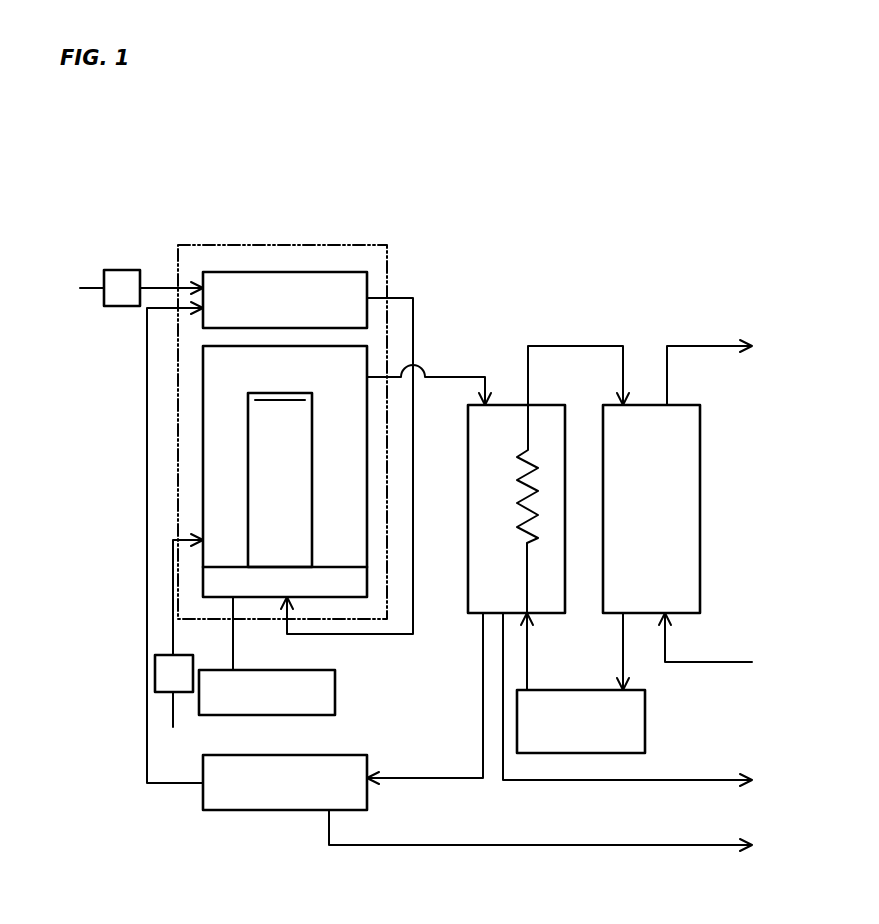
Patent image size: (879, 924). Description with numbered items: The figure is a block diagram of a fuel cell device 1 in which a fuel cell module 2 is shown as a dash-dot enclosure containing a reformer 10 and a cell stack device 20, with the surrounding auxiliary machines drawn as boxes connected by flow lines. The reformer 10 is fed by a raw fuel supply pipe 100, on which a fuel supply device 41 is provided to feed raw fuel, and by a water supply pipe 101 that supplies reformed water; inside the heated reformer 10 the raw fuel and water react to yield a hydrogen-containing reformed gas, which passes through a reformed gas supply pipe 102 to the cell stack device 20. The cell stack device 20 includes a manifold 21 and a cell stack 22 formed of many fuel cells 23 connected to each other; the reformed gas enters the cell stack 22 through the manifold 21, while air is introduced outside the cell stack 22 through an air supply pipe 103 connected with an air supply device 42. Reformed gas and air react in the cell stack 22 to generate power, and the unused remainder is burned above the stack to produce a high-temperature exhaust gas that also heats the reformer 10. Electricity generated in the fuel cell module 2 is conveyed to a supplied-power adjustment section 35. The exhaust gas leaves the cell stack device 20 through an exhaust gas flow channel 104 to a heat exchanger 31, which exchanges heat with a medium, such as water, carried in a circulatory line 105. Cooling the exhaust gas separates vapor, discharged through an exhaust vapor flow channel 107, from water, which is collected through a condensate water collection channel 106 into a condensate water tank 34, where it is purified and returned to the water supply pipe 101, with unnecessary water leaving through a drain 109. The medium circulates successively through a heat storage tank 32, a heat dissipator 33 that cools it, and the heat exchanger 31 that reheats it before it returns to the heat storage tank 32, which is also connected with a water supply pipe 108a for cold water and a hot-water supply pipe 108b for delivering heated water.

The fuel cell device 1 is at (478, 176).
The fuel cell module 2 is at (383, 245).
The reformer 10 is at (333, 280).
The cell stack device 20 is at (203, 365).
The manifold 21 is at (207, 582).
The cell stack 22 is at (248, 447).
The fuel cell 23 is at (258, 482).
The heat exchanger 31 is at (508, 417).
The heat storage tank 32 is at (652, 417).
The heat dissipator 33 is at (577, 737).
The condensate water tank 34 is at (293, 800).
The supplied-power adjustment section 35 is at (285, 700).
The fuel supply device 41 is at (122, 278).
The air supply device 42 is at (165, 678).
The raw fuel supply pipe 100 is at (168, 287).
The water supply pipe 101 is at (147, 505).
The reformed gas supply pipe 102 is at (387, 638).
The air supply pipe 103 is at (172, 625).
The exhaust gas flow channel 104 is at (453, 377).
The circulatory line 105 is at (565, 346).
The condensate water collection channel 106 is at (396, 778).
The exhaust vapor flow channel 107 is at (685, 780).
The water supply pipe 108a is at (705, 662).
The hot-water supply pipe 108b is at (715, 346).
The drain 109 is at (487, 845).